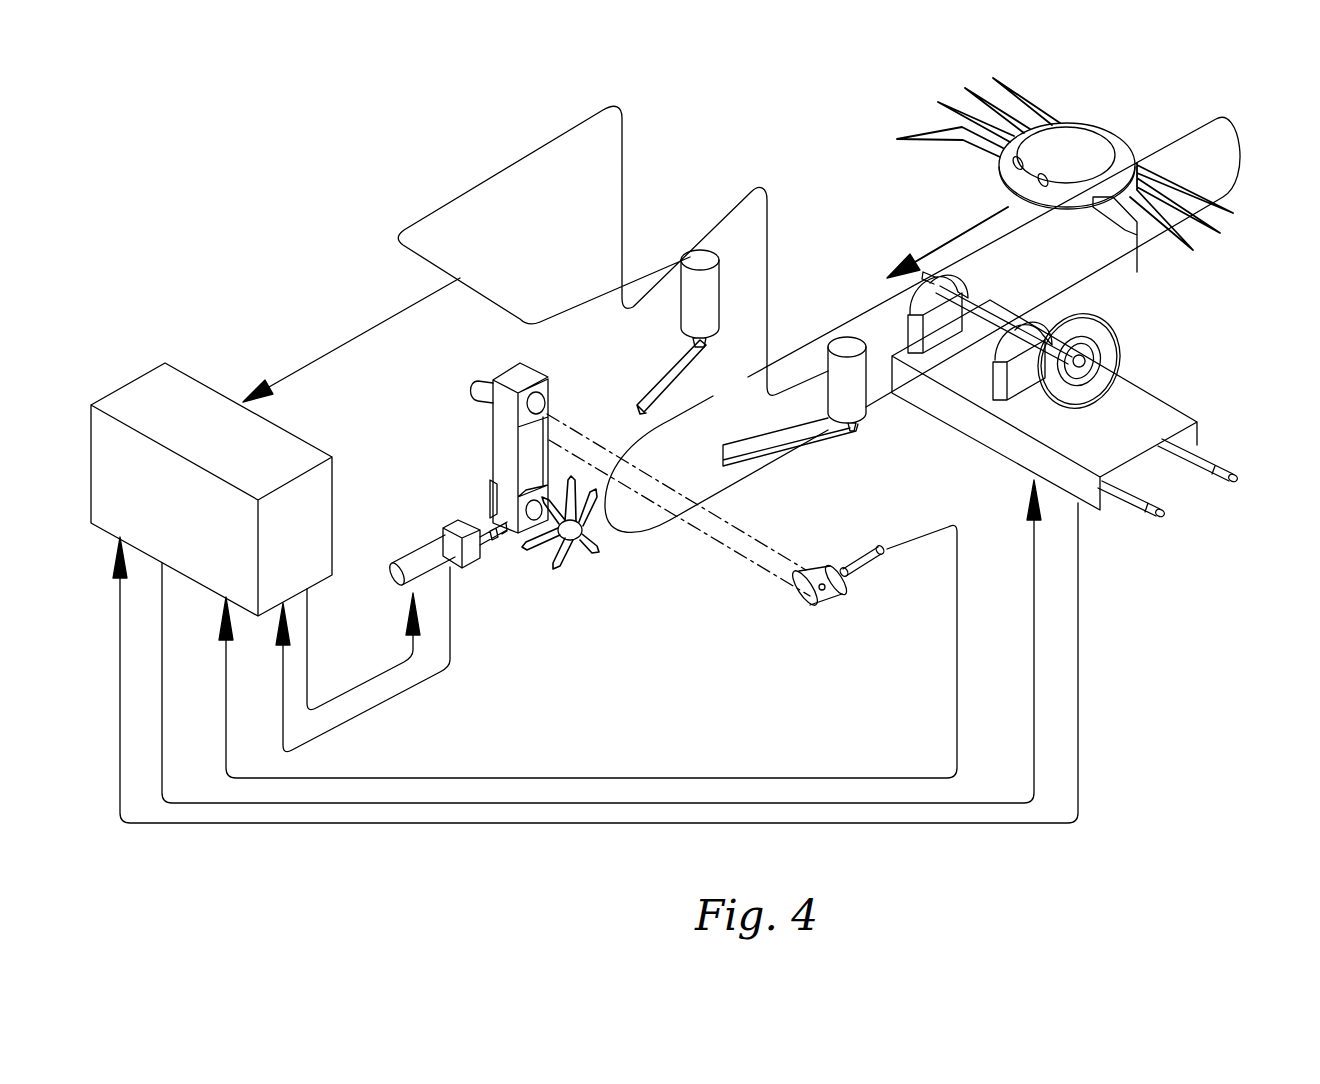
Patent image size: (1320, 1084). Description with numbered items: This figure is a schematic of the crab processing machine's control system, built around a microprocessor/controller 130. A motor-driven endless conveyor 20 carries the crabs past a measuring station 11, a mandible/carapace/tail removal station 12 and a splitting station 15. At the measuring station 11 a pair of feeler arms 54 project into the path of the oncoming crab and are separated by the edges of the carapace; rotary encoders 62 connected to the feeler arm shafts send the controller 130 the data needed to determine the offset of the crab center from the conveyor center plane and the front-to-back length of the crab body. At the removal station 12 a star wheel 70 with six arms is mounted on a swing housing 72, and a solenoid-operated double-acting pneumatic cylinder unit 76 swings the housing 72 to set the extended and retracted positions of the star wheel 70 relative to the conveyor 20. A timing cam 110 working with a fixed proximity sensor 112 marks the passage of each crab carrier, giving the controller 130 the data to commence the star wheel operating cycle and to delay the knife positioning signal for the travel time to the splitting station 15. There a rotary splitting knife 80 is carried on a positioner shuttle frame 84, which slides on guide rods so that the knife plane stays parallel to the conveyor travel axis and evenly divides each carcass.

The conveyor 20 is at (1167, 133).
The rotary encoder 62 is at (693, 257).
The splitting station 15 is at (1232, 322).
The measuring station 11 is at (612, 343).
The mandible/carapace/tail removal station 12 is at (450, 423).
The microprocessor/controller 130 is at (298, 447).
The swing housing 72 is at (503, 450).
The pneumatic cylinder unit 76 is at (433, 550).
The star wheel 70 is at (527, 543).
The feeler arm 54 is at (760, 445).
The timing cam 110 is at (822, 573).
The proximity sensor 112 is at (876, 558).
The rotary splitting knife 80 is at (1113, 347).
The positioner shuttle frame 84 is at (975, 428).